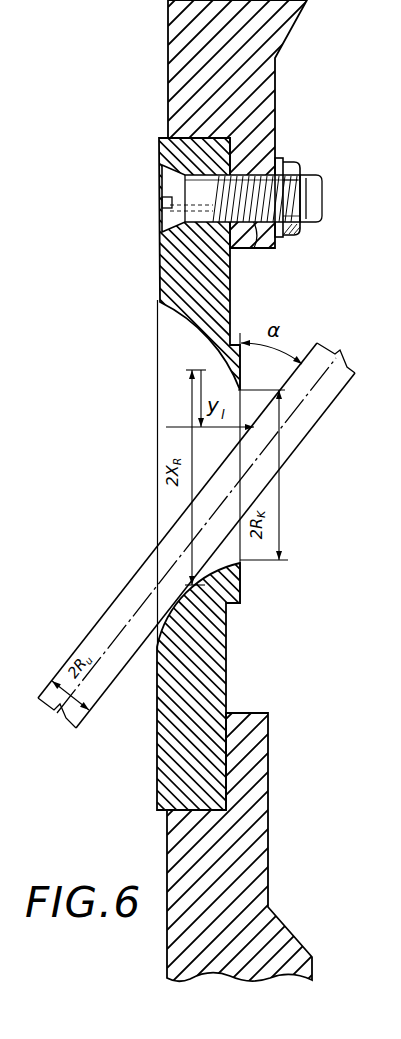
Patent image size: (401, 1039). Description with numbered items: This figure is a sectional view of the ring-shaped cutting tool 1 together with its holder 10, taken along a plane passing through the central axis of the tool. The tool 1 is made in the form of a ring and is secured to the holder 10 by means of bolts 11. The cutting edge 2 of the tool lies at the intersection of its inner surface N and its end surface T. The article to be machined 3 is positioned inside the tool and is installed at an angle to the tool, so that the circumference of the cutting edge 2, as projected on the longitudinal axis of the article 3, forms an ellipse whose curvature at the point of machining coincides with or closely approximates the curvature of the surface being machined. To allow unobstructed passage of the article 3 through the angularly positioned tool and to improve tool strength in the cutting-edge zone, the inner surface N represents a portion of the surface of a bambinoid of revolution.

The ring-shaped cutting tool 1 is at (157, 753).
The cutting edge 2 is at (242, 565).
The article to be machined 3 is at (92, 706).
The holder 10 is at (297, 18).
The bolts 11 is at (252, 249).
The inner surface N is at (170, 324).
The end surface T is at (241, 600).